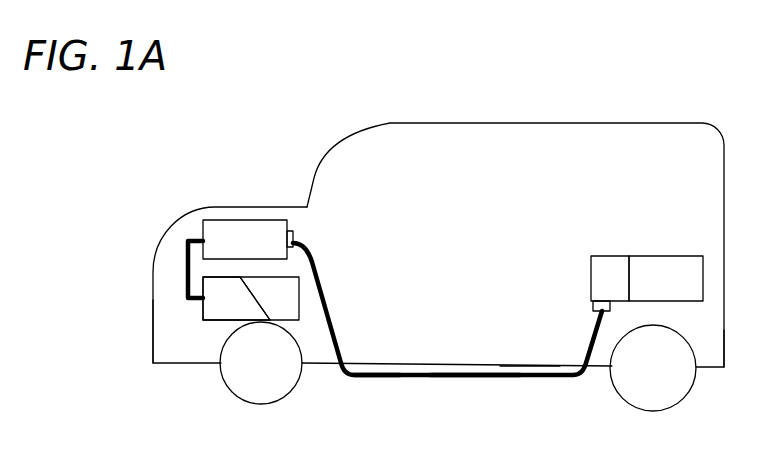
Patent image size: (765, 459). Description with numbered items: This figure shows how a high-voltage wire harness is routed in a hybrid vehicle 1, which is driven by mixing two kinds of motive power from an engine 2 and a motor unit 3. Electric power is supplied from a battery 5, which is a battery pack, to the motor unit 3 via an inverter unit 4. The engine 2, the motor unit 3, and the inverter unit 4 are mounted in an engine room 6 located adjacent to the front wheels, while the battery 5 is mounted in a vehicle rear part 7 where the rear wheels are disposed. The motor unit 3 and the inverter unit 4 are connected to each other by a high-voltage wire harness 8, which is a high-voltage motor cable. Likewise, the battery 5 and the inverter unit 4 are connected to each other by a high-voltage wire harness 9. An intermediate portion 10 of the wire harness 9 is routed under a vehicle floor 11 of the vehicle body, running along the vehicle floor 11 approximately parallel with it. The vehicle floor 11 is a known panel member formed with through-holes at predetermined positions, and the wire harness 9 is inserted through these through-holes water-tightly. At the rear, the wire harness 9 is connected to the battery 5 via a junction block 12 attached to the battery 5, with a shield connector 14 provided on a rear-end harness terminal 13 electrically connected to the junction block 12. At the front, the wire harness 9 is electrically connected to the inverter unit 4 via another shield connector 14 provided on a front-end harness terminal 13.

The hybrid vehicle 1 is at (489, 117).
The engine 2 is at (288, 310).
The motor unit 3 is at (222, 310).
The inverter unit 4 is at (232, 235).
The battery 5 is at (672, 268).
The engine room 6 is at (170, 337).
The vehicle rear part 7 is at (707, 335).
The high-voltage wire harness 8 is at (183, 272).
The high-voltage wire harness 9 is at (375, 378).
The intermediate portion 10 is at (475, 378).
The vehicle floor 11 is at (530, 368).
The junction block 12 is at (612, 268).
The harness terminal 13 is at (307, 244).
The shield connector 14 is at (291, 231).